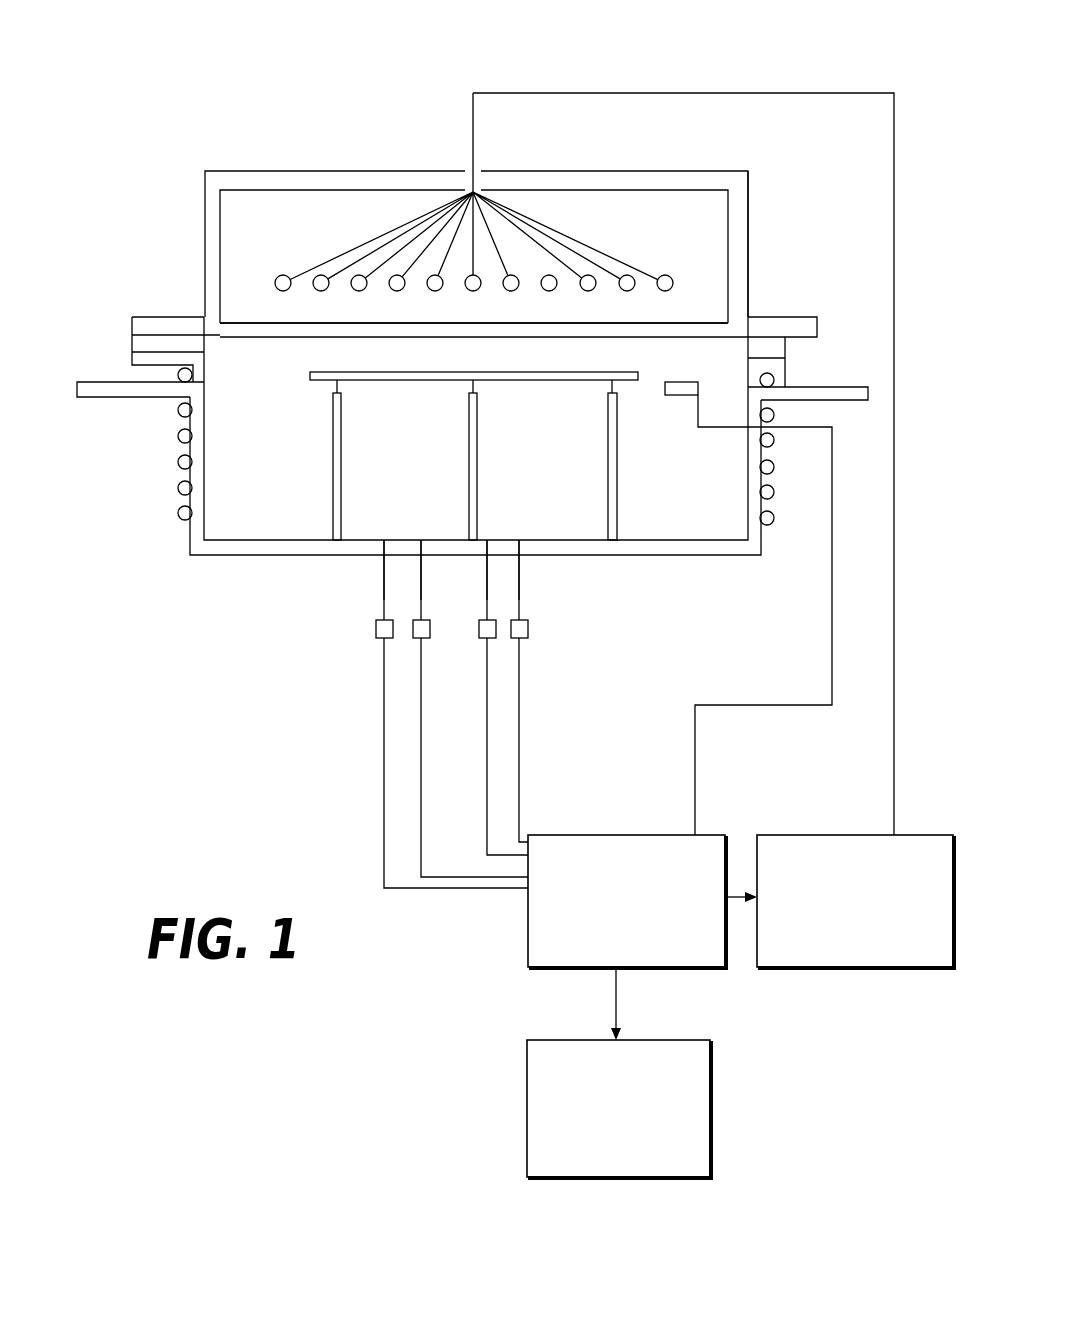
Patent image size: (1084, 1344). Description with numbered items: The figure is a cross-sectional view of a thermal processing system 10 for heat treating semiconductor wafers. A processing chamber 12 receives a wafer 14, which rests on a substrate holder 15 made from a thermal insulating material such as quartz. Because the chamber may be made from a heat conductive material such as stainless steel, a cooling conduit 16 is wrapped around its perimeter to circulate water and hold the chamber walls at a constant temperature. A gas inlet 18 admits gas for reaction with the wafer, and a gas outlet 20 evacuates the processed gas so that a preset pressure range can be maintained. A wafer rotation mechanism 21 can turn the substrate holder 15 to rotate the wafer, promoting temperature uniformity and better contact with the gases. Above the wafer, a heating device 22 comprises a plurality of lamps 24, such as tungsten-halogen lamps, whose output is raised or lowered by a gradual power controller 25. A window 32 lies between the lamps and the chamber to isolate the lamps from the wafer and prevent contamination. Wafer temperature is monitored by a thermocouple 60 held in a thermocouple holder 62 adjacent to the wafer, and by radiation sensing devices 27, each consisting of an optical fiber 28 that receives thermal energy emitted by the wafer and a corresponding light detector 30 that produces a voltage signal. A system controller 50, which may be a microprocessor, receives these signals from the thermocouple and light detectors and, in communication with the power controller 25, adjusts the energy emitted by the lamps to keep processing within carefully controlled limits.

The thermal processing system 10 is at (185, 108).
The processing chamber 12 is at (190, 470).
The wafer 14 is at (310, 375).
The substrate holder 15 is at (333, 462).
The cooling conduit 16 is at (178, 513).
The gas inlet 18 is at (855, 387).
The gas outlet 20 is at (87, 397).
The wafer rotation mechanism 21 is at (710, 1107).
The heating device 22 is at (345, 208).
The lamps 24 is at (318, 276).
The power controller 25 is at (776, 835).
The radiation sensing devices 27 is at (421, 725).
The optical fibers 28 is at (421, 595).
The light detectors 30 is at (415, 638).
The window 32 is at (665, 323).
The system controller 50 is at (632, 835).
The thermocouple 60 is at (643, 387).
The thermocouple holder 62 is at (678, 395).